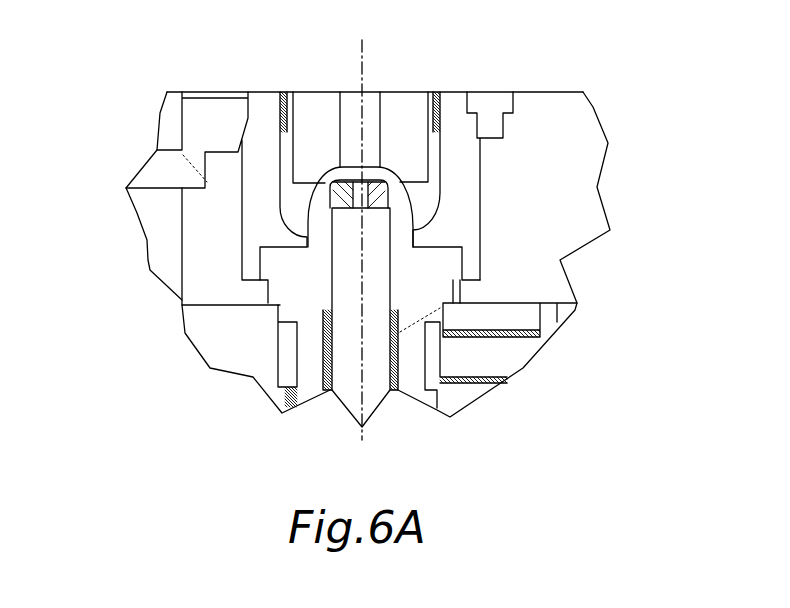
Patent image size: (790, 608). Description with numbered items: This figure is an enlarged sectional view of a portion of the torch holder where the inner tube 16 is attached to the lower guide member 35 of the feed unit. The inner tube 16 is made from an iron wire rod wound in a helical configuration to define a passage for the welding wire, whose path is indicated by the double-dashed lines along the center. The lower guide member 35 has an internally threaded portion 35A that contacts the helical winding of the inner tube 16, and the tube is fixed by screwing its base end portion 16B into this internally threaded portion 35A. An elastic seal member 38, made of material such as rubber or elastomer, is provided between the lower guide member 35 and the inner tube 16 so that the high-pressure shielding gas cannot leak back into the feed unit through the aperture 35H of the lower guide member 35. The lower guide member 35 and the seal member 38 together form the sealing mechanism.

The inner tube 16 is at (342, 352).
The base end portion 16B is at (350, 248).
The lower guide member 35 is at (440, 267).
The internally threaded portion 35A is at (307, 237).
The aperture 35H is at (368, 170).
The elastic seal member 38 is at (383, 196).